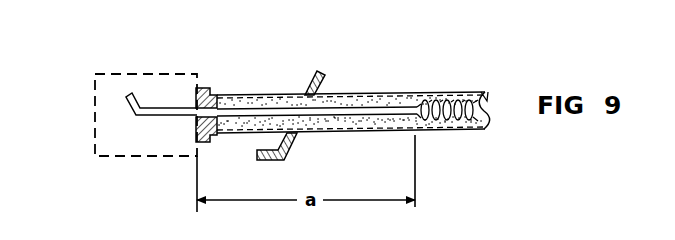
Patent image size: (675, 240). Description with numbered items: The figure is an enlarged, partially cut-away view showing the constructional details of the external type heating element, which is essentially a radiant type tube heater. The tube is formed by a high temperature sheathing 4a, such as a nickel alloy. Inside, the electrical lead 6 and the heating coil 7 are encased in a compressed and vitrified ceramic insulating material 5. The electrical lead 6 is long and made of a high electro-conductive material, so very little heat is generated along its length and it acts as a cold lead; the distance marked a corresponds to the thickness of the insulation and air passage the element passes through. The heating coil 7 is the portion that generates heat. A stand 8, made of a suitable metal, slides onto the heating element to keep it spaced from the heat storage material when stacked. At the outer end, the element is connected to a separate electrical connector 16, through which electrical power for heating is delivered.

The electrical connector 16 is at (104, 109).
The electrical lead 6 is at (137, 104).
The ceramic insulating material 5 is at (247, 95).
The sheathing 4a is at (374, 92).
The heating coil 7 is at (446, 92).
The stand 8 is at (322, 71).